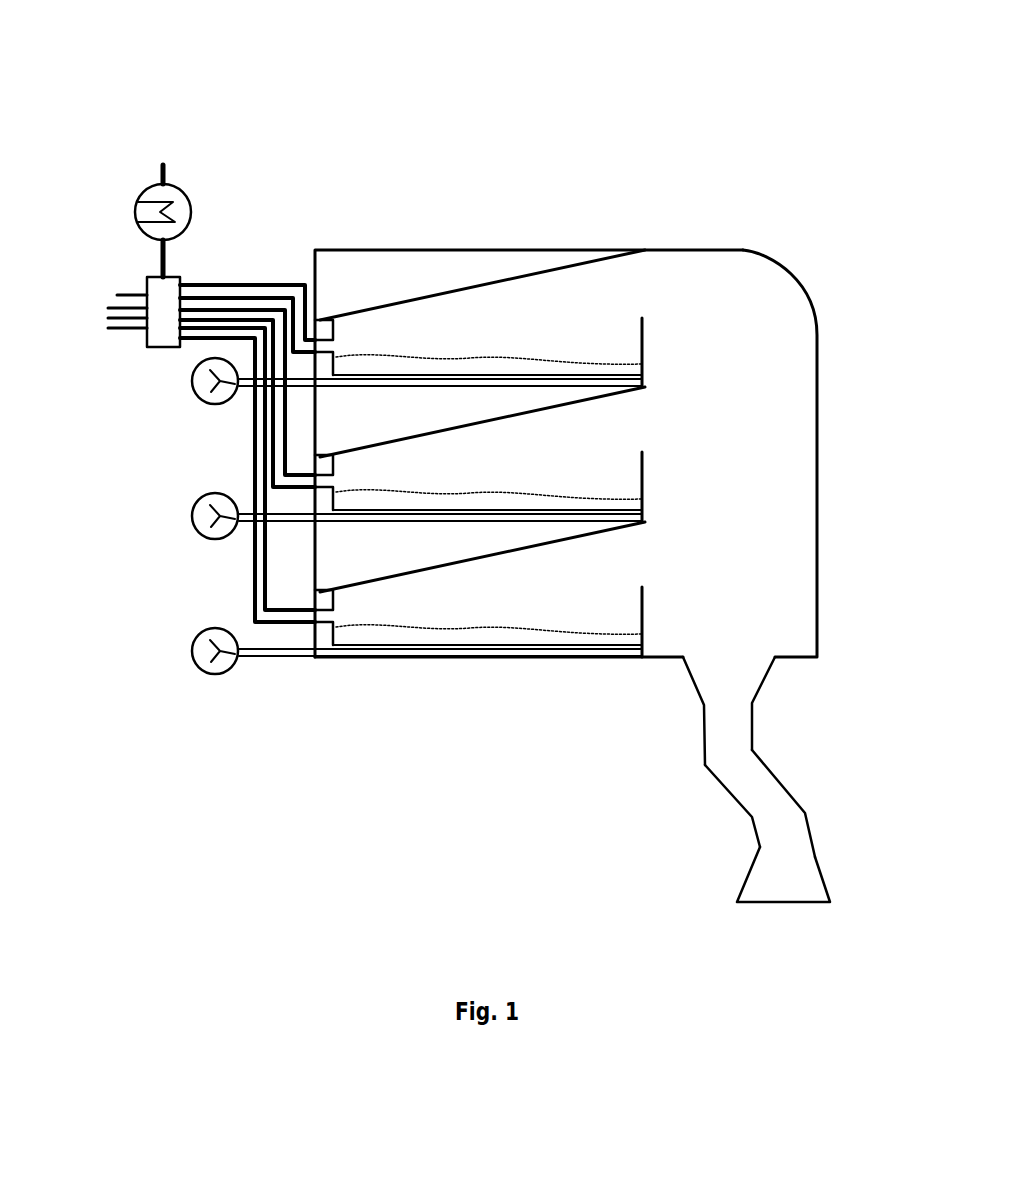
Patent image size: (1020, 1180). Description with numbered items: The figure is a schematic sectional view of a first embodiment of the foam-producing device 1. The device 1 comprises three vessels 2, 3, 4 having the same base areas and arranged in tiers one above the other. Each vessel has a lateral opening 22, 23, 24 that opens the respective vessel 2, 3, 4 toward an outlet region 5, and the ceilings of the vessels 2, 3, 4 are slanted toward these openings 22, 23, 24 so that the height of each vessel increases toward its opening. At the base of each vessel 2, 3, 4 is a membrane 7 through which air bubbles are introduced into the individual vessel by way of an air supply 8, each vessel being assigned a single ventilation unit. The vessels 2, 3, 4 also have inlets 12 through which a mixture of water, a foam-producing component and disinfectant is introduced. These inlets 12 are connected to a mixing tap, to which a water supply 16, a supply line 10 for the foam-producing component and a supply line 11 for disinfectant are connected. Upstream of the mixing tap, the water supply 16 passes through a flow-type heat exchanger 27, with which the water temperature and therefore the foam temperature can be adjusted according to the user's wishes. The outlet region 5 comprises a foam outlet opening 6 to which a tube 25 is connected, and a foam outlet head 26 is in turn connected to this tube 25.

The device 1 is at (789, 181).
The vessel 2 is at (522, 609).
The vessel 3 is at (528, 464).
The vessel 4 is at (523, 332).
The outlet region 5 is at (779, 463).
The foam outlet opening 6 is at (740, 680).
The membrane 7 is at (416, 379).
The air supply 8 is at (187, 390).
The supply line for component producing foam 10 is at (113, 294).
The supply line for disinfectant 11 is at (127, 322).
The inlet 12 is at (315, 344).
The water supply 16 is at (160, 152).
The lateral opening 22 is at (650, 563).
The lateral opening 23 is at (648, 423).
The lateral opening 24 is at (650, 267).
The tube 25 is at (735, 757).
The foam outlet head 26 is at (800, 886).
The flow-type heat exchanger 27 is at (199, 195).